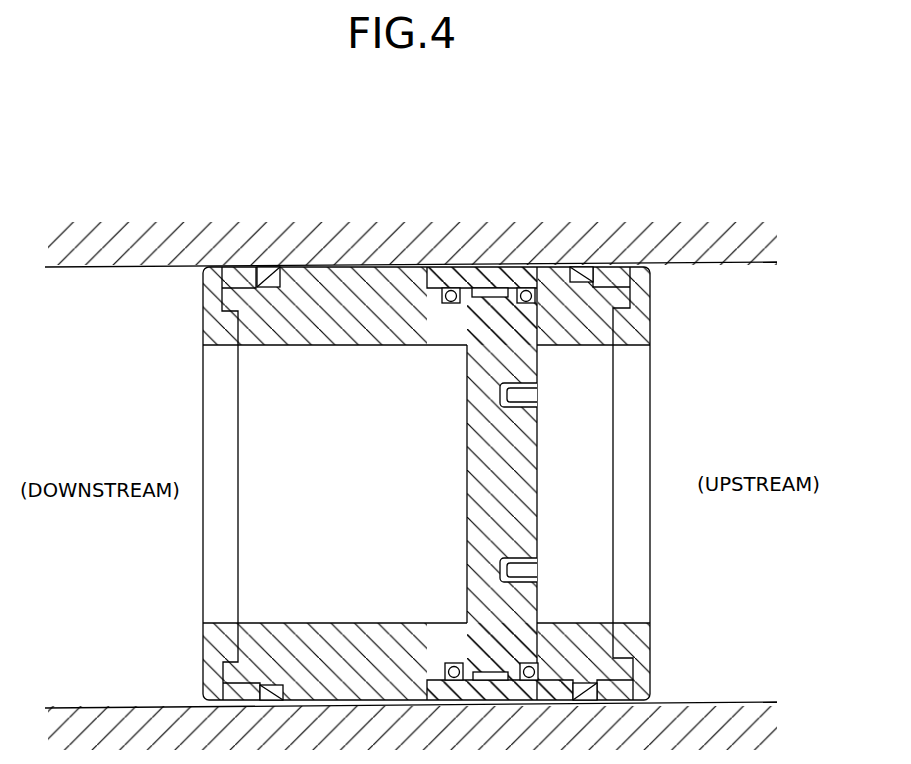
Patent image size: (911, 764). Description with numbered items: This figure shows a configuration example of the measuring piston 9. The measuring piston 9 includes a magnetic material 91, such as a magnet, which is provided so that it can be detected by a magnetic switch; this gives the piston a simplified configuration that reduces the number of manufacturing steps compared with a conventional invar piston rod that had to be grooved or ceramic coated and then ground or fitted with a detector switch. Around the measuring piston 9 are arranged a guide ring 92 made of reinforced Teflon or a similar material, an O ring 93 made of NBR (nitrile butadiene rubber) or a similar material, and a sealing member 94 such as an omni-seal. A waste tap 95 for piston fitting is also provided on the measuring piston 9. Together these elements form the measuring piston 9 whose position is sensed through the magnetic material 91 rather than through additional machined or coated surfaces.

The measuring piston 9 is at (677, 335).
The magnetic material 91 is at (492, 288).
The guide ring 92 is at (240, 265).
The O ring 93 is at (450, 288).
The sealing member 94 is at (272, 263).
The waste tap 95 is at (530, 570).